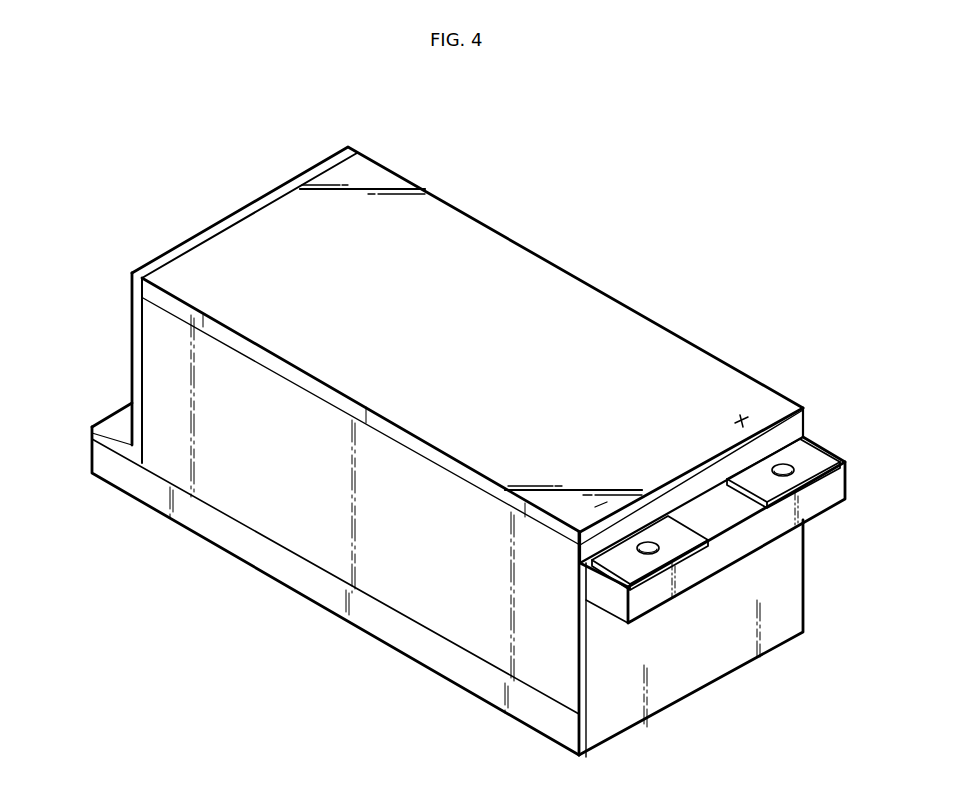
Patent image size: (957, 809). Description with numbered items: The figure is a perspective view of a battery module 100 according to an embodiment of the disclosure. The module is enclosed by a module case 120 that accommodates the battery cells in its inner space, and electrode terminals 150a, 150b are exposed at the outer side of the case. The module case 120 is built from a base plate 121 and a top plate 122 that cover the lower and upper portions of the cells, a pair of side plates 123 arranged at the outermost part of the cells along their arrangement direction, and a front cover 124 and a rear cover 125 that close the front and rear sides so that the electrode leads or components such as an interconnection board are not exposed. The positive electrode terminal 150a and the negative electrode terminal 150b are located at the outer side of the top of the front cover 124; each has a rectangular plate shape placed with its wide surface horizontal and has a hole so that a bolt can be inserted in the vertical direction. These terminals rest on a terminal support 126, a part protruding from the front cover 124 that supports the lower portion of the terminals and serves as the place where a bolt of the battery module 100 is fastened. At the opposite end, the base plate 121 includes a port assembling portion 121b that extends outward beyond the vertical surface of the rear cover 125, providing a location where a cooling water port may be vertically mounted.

The battery module 100 is at (178, 105).
The module case 120 is at (458, 205).
The base plate 121 is at (335, 595).
The port assembling portion 121b is at (100, 460).
The top plate 122 is at (523, 269).
The side plate 123 is at (275, 520).
The front cover 124 is at (695, 668).
The rear cover 125 is at (132, 300).
The terminal support 126 is at (838, 488).
The positive electrode terminal 150a is at (813, 460).
The negative electrode terminal 150b is at (628, 562).